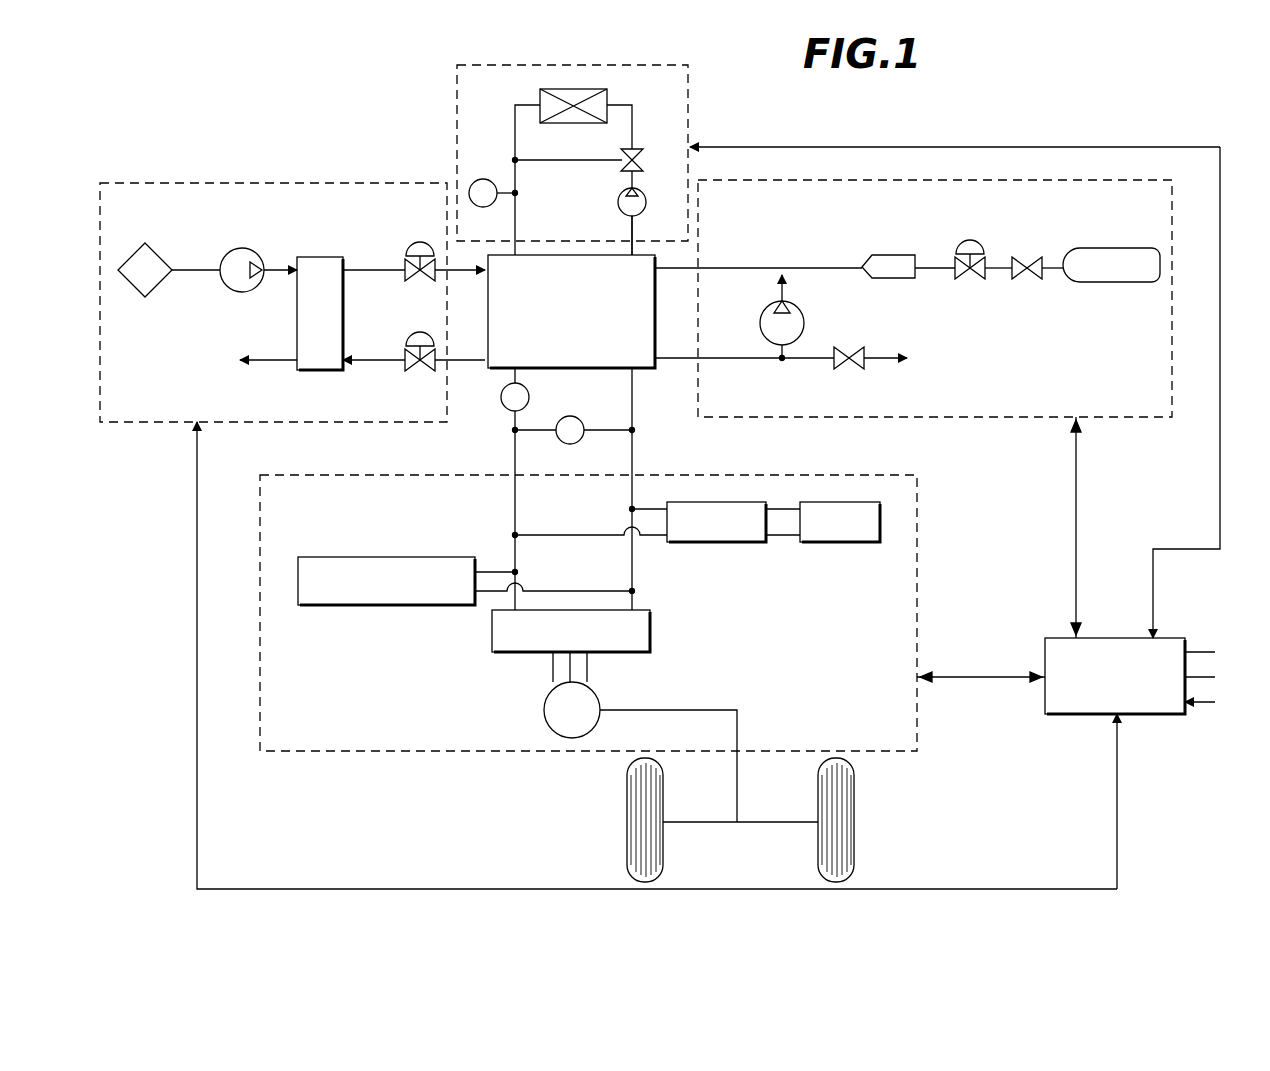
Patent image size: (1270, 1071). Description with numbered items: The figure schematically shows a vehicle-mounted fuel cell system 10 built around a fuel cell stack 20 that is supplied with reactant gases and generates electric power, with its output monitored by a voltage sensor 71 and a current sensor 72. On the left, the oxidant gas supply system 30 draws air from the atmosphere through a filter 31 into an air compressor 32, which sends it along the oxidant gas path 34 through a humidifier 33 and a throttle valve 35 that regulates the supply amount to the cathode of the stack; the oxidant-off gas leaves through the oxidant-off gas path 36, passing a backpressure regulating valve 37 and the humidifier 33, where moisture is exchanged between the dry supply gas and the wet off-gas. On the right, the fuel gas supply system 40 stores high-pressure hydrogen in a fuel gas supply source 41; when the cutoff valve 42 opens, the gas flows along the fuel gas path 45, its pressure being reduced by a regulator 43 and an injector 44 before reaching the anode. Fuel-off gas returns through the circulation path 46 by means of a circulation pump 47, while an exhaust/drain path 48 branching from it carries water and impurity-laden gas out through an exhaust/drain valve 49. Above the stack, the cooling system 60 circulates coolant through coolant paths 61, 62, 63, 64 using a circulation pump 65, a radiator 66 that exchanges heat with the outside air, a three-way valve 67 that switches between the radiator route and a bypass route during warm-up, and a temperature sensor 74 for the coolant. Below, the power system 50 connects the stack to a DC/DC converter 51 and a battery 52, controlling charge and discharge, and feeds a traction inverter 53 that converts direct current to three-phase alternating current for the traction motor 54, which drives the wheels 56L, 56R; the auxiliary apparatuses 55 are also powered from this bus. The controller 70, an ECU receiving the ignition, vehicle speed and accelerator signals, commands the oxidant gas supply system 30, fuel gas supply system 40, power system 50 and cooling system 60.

The fuel cell system 10 is at (1064, 110).
The fuel cell stack 20 is at (640, 370).
The oxidant gas supply system 30 is at (247, 183).
The filter 31 is at (158, 258).
The air compressor 32 is at (240, 248).
The humidifier 33 is at (320, 256).
The oxidant gas path 34 is at (358, 269).
The throttle valve 35 is at (418, 242).
The oxidant-off gas path 36 is at (358, 359).
The backpressure regulating valve 37 is at (418, 332).
The fuel gas supply system 40 is at (1108, 418).
The fuel gas supply source 41 is at (1102, 248).
The cutoff valve 42 is at (1028, 257).
The regulator 43 is at (970, 240).
The injector 44 is at (889, 254).
The fuel gas path 45 is at (721, 267).
The circulation path 46 is at (712, 352).
The circulation pump 47 is at (805, 316).
The exhaust/drain path 48 is at (876, 352).
The exhaust/drain valve 49 is at (846, 370).
The power system 50 is at (921, 502).
The DC/DC converter 51 is at (715, 542).
The battery 52 is at (835, 542).
The traction inverter 53 is at (652, 632).
The traction motor 54 is at (600, 700).
The auxiliary apparatuses 55 is at (426, 557).
The wheel 56L is at (628, 834).
The wheel 56R is at (855, 829).
The cooling system 60 is at (690, 76).
The coolant path 61 is at (635, 228).
The coolant path 62 is at (598, 162).
The coolant path 63 is at (517, 205).
The coolant path 64 is at (619, 106).
The circulation pump 65 is at (639, 198).
The radiator 66 is at (585, 124).
The three-way valve 67 is at (634, 148).
The controller 70 is at (1168, 638).
The voltage sensor 71 is at (585, 440).
The current sensor 72 is at (502, 406).
The temperature sensor 74 is at (480, 180).